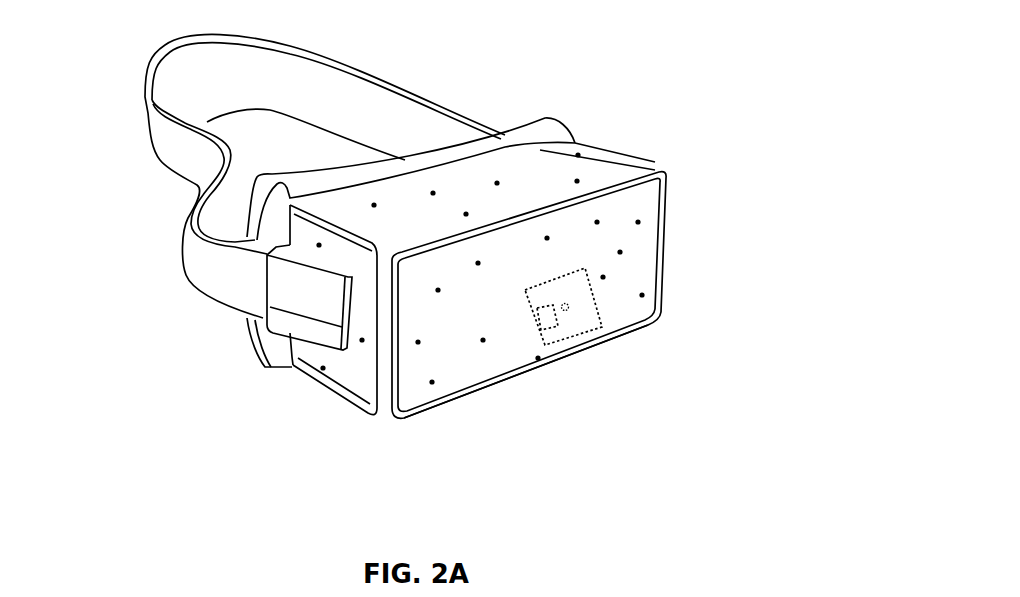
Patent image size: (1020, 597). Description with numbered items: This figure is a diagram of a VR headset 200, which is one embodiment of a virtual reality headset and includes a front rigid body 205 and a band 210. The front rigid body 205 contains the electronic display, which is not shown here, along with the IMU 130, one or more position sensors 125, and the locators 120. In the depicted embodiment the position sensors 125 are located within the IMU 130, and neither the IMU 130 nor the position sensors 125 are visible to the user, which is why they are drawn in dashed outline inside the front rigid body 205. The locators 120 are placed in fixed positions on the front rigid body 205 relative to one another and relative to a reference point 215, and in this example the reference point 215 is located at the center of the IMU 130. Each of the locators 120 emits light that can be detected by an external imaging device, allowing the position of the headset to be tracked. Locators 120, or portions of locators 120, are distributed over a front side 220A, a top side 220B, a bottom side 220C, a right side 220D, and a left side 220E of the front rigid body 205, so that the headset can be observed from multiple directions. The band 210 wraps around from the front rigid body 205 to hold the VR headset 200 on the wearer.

The VR headset 200 is at (447, 275).
The band 210 is at (413, 93).
The front rigid body 205 is at (461, 290).
The front side 220A is at (421, 403).
The top side 220B is at (345, 205).
The bottom side 220C is at (316, 402).
The right side 220D is at (356, 373).
The left side 220E is at (643, 150).
The locators 120 is at (648, 294).
The position sensors 125 is at (543, 328).
The IMU 130 is at (608, 320).
The reference point 215 is at (568, 318).